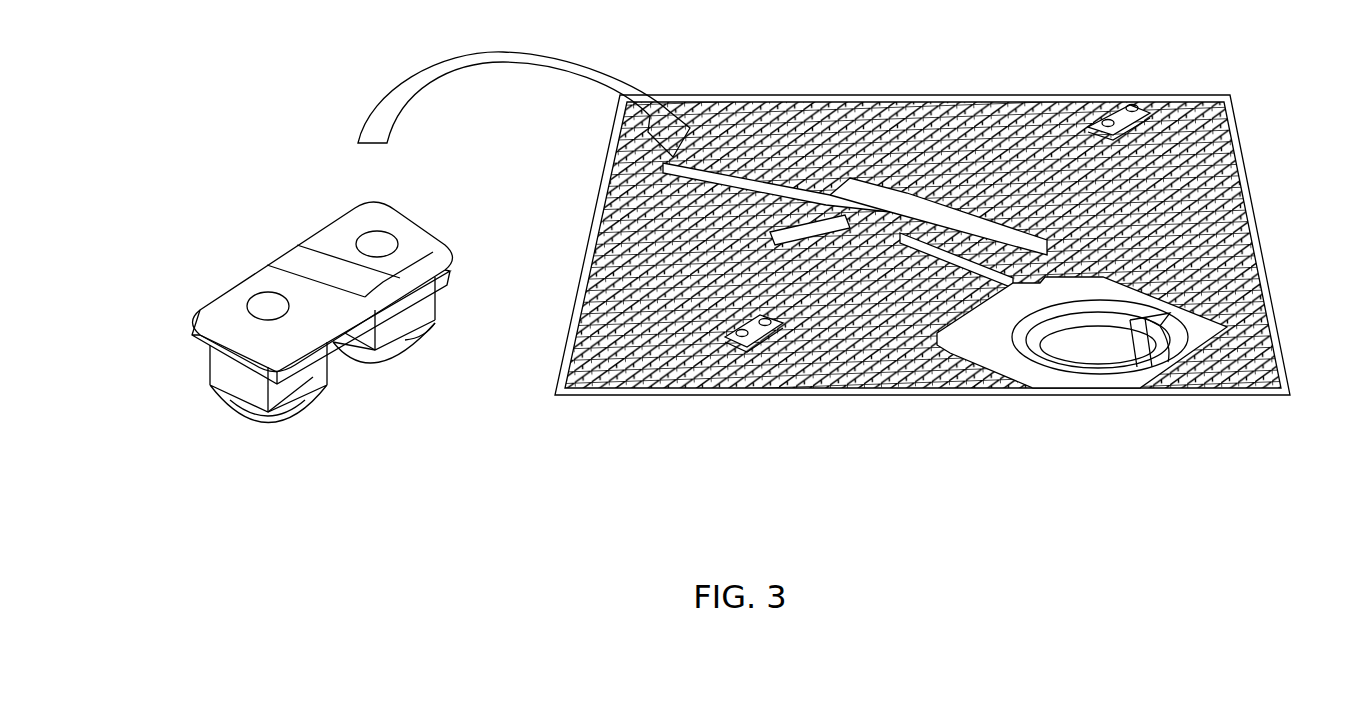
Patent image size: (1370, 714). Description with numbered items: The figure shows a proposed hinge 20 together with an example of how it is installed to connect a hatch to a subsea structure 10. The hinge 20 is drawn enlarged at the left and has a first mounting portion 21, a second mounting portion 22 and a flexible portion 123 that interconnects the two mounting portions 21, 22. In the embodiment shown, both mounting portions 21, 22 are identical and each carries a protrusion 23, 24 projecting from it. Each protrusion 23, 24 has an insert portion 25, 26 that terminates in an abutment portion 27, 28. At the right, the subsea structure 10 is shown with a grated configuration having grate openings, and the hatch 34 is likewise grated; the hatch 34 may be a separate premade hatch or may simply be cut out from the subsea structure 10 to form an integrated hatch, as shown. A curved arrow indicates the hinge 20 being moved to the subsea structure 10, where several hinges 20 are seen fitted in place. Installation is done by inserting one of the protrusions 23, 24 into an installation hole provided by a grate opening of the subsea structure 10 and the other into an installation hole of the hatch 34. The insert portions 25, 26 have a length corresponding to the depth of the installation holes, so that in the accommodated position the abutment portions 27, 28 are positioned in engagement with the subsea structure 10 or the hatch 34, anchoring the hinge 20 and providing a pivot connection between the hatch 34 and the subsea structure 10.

The subsea structure 10 is at (1283, 225).
The hatch 34 is at (1025, 130).
The hinge 20 is at (1130, 105).
The first mounting portion 21 is at (418, 243).
The second mounting portion 22 is at (215, 322).
The flexible portion 123 is at (302, 262).
The protrusion 23 is at (452, 300).
The protrusion 24 is at (205, 380).
The insert portion 25 is at (368, 335).
The insert portion 26 is at (315, 372).
The abutment portion 27 is at (438, 343).
The abutment portion 28 is at (290, 400).